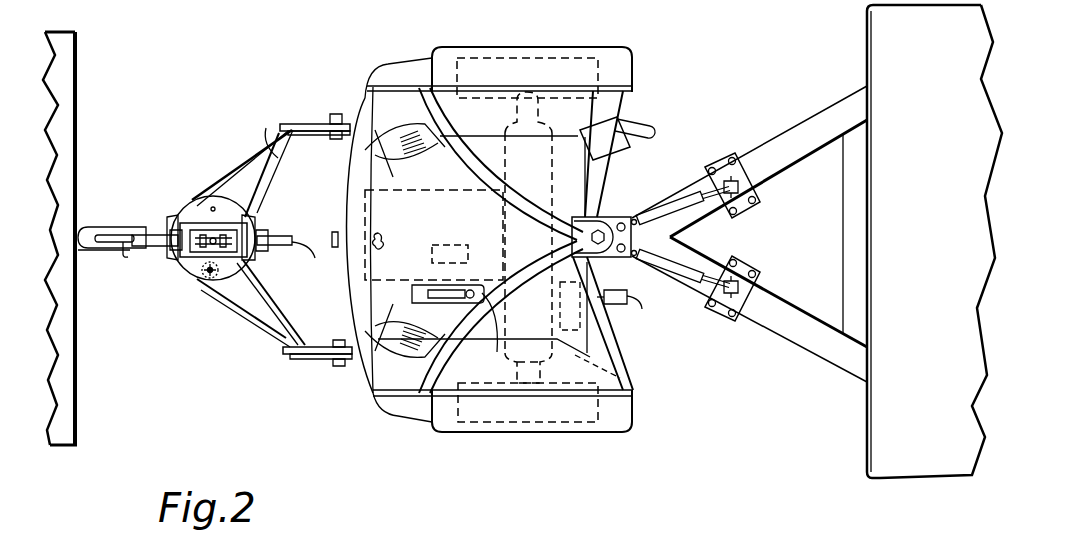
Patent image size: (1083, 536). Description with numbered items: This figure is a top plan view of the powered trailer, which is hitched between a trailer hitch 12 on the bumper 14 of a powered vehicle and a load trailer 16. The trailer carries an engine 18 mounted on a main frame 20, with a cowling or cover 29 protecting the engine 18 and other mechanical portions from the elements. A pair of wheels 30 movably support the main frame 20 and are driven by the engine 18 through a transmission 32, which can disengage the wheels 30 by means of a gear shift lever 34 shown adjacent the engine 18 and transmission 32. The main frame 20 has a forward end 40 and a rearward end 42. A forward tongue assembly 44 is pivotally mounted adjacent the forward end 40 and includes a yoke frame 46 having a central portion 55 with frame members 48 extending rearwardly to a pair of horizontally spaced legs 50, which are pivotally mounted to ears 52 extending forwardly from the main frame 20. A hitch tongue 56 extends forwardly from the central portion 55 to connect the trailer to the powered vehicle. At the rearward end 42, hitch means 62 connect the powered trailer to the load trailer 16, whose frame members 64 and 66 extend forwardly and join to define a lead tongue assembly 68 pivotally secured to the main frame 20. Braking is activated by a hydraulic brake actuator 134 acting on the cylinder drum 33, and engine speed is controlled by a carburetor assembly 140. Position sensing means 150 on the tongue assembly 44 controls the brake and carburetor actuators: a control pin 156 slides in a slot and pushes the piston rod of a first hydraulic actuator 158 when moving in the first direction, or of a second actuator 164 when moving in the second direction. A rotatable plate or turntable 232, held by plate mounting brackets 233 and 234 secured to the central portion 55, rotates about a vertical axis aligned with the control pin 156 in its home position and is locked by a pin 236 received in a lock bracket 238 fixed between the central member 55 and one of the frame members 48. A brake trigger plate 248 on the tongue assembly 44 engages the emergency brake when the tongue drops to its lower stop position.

The trailer hitch 12 is at (82, 230).
The bumper 14 is at (70, 43).
The load trailer 16 is at (927, 182).
The engine 18 is at (452, 196).
The main frame 20 is at (365, 382).
The cowling or cover 29 is at (375, 90).
The wheels 30 is at (508, 55).
The transmission 32 is at (543, 323).
The lower frame member 33 is at (600, 386).
The gear shift lever 34 is at (497, 353).
The forward end 40 is at (347, 178).
The rearward end 42 is at (590, 334).
The forward tongue assembly 44 is at (258, 154).
The yoke frame 46 is at (239, 165).
The frame members 48 is at (277, 138).
The legs 50 is at (300, 124).
The ears 52 is at (328, 118).
The central portion 55 is at (168, 228).
The hitch tongue 56 is at (128, 228).
The hitch means 62 is at (755, 243).
The frame member 64 is at (846, 110).
The frame member 66 is at (790, 326).
The lead tongue assembly 68 is at (653, 234).
The hydraulic brake actuator 134 is at (610, 290).
The carburetor assembly 140 is at (456, 244).
The position sensing means 150 is at (180, 192).
The control pin 156 is at (213, 236).
The first hydraulic actuator 158 is at (151, 251).
The second actuator 164 is at (271, 231).
The rotatable plate or turntable 232 is at (197, 197).
The plate mounting bracket 233 is at (178, 262).
The plate mounting bracket 234 is at (252, 261).
The pin 236 is at (205, 278).
The lock bracket 238 is at (218, 296).
The brake trigger plate 248 is at (297, 360).